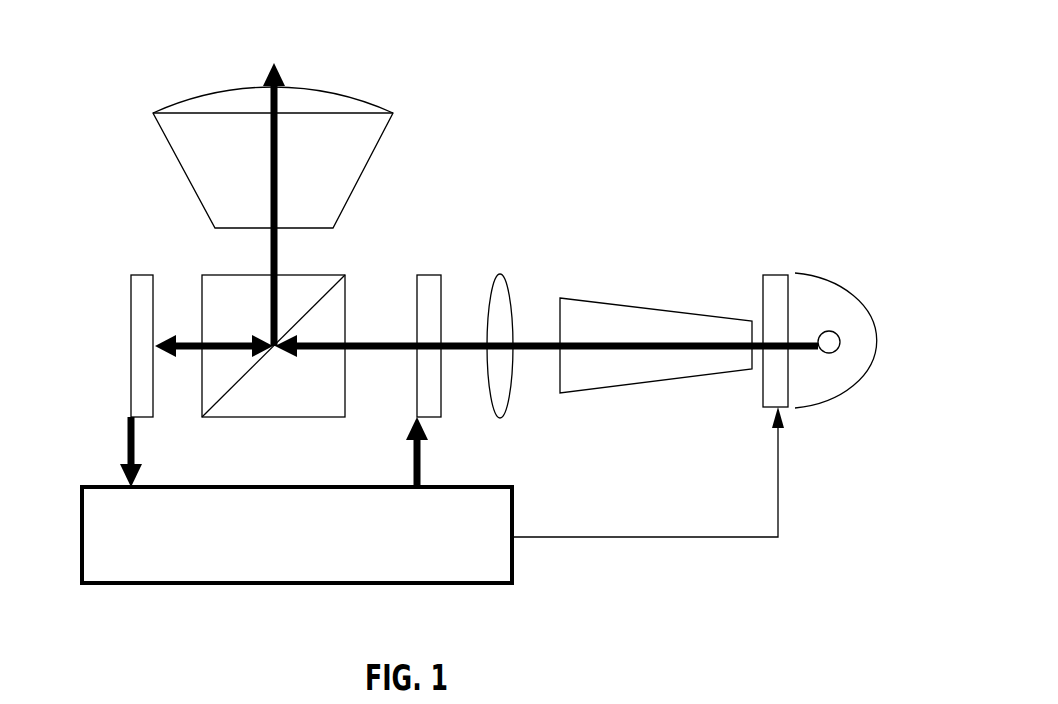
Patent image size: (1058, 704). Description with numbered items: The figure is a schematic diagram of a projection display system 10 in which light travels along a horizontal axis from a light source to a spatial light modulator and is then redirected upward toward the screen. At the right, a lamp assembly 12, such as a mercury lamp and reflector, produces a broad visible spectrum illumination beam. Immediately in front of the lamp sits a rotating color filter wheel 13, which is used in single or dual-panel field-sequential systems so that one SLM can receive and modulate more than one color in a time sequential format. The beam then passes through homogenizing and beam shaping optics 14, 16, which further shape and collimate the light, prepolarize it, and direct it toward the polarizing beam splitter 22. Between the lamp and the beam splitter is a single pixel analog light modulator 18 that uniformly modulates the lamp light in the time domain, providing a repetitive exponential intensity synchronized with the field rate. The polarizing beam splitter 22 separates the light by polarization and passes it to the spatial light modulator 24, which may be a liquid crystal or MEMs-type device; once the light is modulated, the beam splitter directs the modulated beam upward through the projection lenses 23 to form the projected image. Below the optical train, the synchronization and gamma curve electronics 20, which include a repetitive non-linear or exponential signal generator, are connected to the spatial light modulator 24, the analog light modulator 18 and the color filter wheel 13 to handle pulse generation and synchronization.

The projection display system 10 is at (778, 44).
The lamp assembly 12 is at (858, 324).
The rotating color filter wheel 13 is at (682, 379).
The homogenizing and beam shaping optics 14 is at (656, 329).
The homogenizing and beam shaping optics 16 is at (541, 325).
The single pixel analog light modulator 18 is at (462, 352).
The synchronization and gamma curve electronics 20 is at (347, 516).
The polarizing beam splitter 22 is at (273, 364).
The projection lenses 23 is at (314, 157).
The spatial light modulator 24 is at (96, 381).